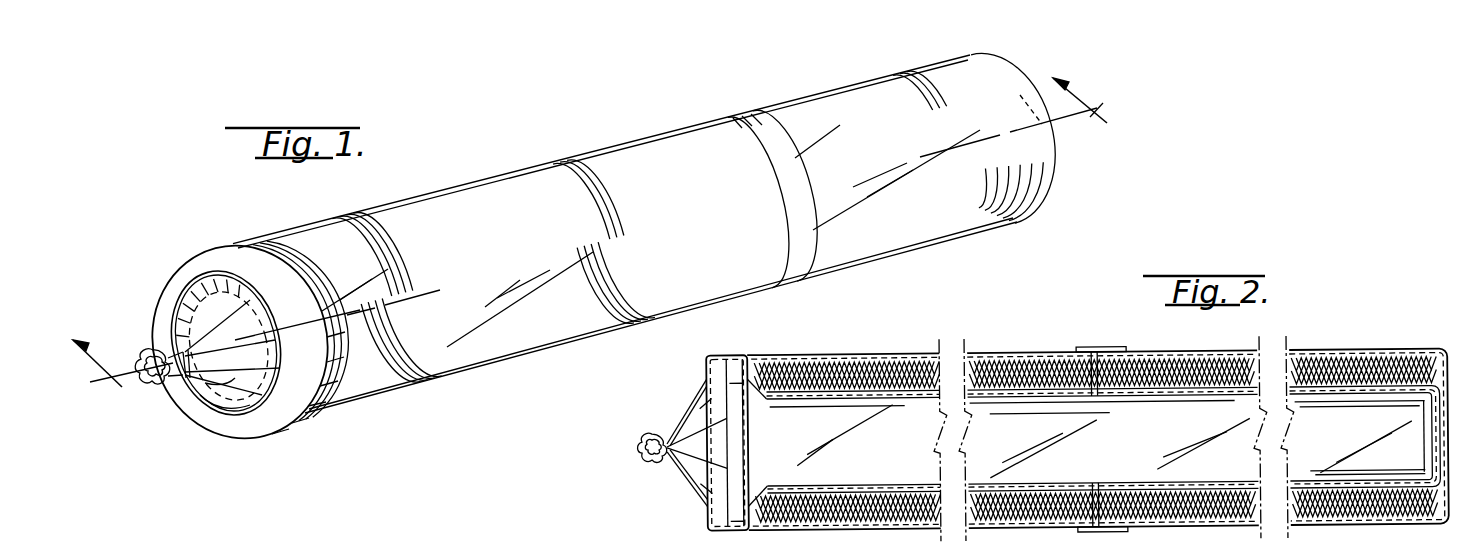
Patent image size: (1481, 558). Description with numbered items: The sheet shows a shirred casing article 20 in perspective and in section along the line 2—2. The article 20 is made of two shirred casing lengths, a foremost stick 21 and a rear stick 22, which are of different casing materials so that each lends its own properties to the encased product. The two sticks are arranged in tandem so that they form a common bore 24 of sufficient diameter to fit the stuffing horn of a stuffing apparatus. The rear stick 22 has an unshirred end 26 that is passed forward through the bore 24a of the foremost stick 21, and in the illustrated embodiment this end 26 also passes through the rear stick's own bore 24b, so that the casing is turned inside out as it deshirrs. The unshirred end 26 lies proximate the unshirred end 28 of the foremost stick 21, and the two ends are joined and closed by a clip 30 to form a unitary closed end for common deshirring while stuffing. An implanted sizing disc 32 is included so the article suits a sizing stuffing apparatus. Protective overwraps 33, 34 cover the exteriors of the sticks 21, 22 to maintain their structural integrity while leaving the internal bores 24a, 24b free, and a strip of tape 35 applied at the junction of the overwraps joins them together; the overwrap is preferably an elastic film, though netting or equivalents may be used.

In FIG. 1, the section line 2— 2 is at (597, 249).
In FIG. 1, the shirred casing article 20 is at (610, 127).
In FIG. 2, the shirred casing article 20 is at (1007, 333).
In FIG. 1, the foremost shirred casing length 21 is at (548, 170).
In FIG. 2, the foremost shirred casing length 21 is at (900, 353).
In FIG. 1, the rear shirred casing length 22 is at (840, 100).
In FIG. 2, the rear shirred casing length 22 is at (1377, 350).
In FIG. 2, the common bore 24 is at (1447, 390).
In FIG. 2, the bore of foremost stick 24a is at (837, 383).
In FIG. 2, the bore of rear stick 24b is at (1293, 380).
In FIG. 1, the unshirred end of rear stick 26 is at (150, 359).
In FIG. 2, the unshirred end of rear stick 26 is at (782, 403).
In FIG. 1, the unshirred end of foremost stick 28 is at (200, 347).
In FIG. 2, the unshirred end of foremost stick 28 is at (693, 403).
In FIG. 1, the clip 30 is at (168, 378).
In FIG. 2, the clip 30 is at (667, 437).
In FIG. 1, the sizing disc 32 is at (212, 258).
In FIG. 2, the sizing disc 32 is at (727, 488).
In FIG. 1, the protective overwrap of foremost stick 33 is at (505, 276).
In FIG. 2, the protective overwrap of foremost stick 33 is at (845, 353).
In FIG. 1, the protective overwrap of rear stick 34 is at (890, 164).
In FIG. 2, the protective overwrap of rear stick 34 is at (1213, 352).
In FIG. 1, the strip of tape 35 is at (720, 114).
In FIG. 2, the strip of tape 35 is at (1097, 322).